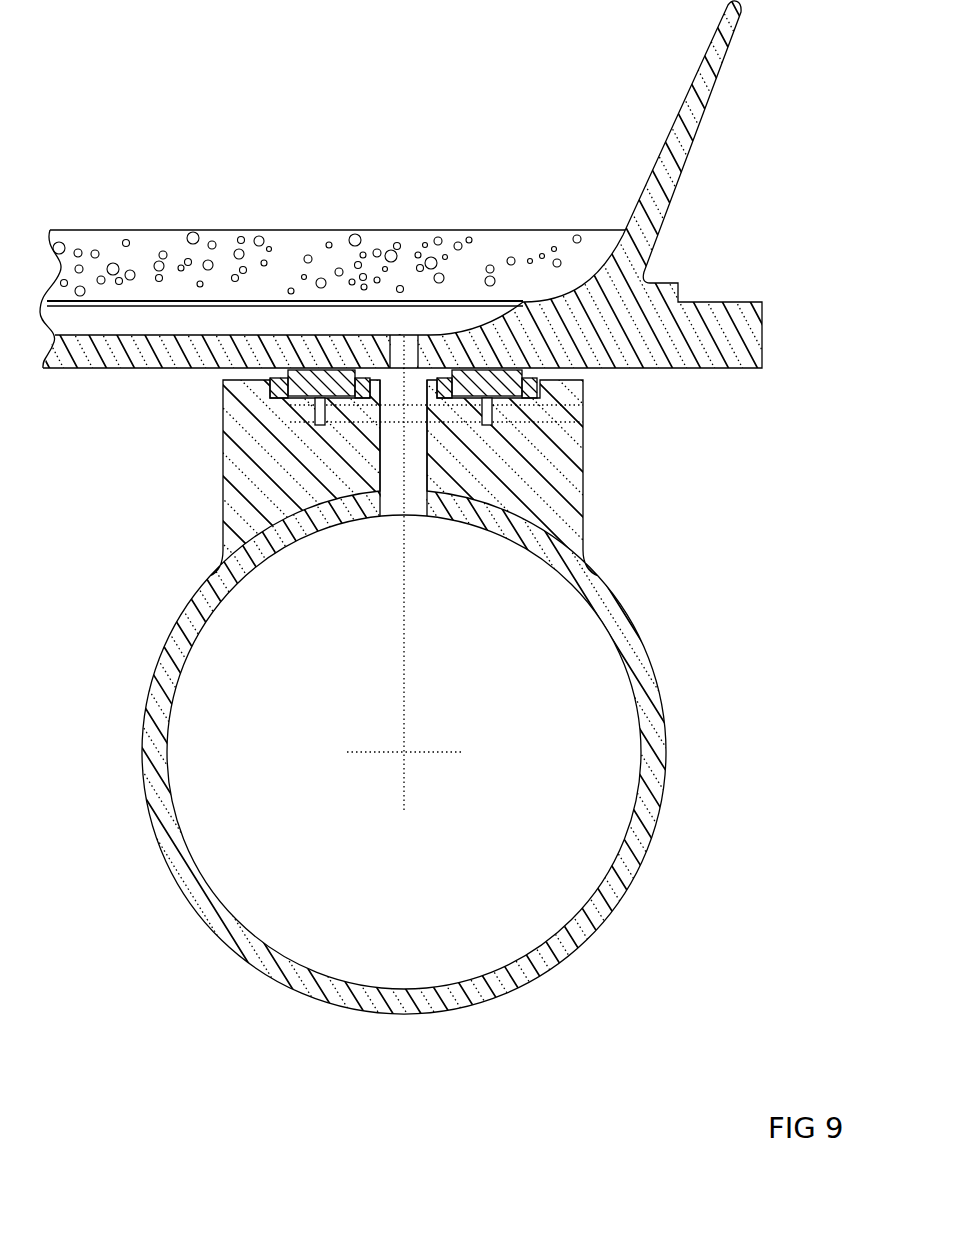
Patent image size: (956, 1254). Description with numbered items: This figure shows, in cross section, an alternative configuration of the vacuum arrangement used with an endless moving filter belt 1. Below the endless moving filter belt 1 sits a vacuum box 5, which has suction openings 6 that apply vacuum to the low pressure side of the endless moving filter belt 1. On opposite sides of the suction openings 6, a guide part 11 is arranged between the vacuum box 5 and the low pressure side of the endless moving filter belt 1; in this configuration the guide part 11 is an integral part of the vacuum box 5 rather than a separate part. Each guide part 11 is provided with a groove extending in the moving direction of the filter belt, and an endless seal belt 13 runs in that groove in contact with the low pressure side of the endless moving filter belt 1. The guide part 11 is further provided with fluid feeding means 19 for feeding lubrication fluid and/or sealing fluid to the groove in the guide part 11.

The endless moving filter belt 1 is at (713, 318).
The vacuum box 5 is at (632, 652).
The suction openings 6 is at (385, 487).
The guide part 11 is at (247, 462).
The endless seal belt 13 is at (314, 372).
The fluid feeding means 19 is at (565, 412).